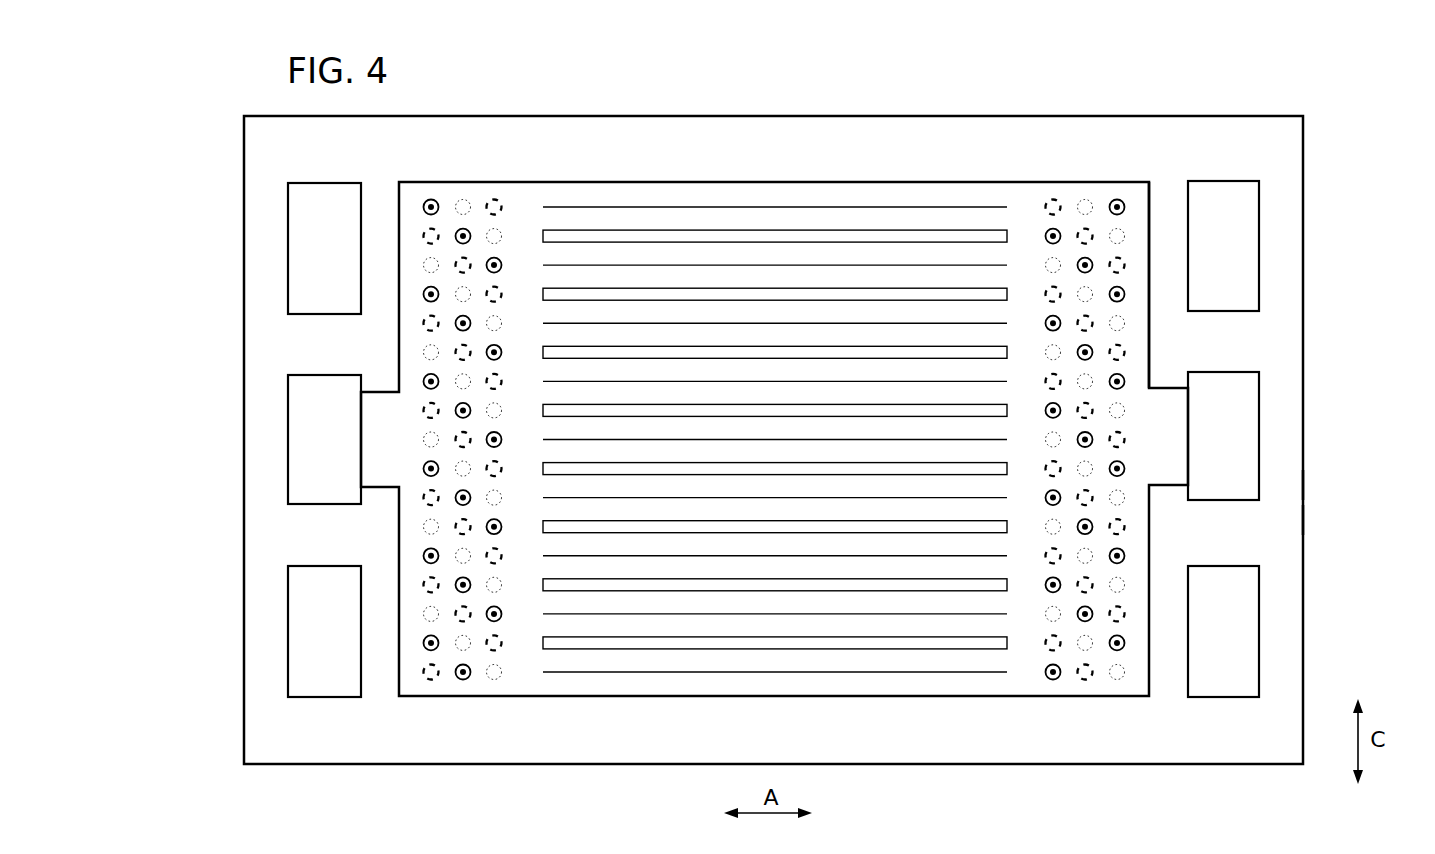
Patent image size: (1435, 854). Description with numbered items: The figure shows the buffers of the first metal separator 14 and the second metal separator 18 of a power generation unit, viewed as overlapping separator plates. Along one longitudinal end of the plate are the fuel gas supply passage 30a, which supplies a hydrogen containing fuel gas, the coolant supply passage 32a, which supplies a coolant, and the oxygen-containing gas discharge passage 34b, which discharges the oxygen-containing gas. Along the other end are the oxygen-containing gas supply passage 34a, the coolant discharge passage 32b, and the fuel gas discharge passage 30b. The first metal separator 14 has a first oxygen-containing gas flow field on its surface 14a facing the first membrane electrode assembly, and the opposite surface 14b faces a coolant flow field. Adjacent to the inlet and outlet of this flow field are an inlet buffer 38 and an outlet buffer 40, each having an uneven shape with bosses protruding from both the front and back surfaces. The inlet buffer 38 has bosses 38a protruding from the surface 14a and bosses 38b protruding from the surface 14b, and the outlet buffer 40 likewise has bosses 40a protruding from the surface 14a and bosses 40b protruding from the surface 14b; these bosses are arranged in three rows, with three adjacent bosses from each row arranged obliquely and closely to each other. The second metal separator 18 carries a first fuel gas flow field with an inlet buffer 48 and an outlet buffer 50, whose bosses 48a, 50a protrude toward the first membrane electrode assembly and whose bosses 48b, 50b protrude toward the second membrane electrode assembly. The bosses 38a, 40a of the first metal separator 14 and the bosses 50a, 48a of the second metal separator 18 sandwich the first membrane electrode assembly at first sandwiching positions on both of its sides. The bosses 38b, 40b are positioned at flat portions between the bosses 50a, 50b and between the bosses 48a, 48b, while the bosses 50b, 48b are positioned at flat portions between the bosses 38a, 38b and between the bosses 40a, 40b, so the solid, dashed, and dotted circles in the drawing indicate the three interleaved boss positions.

The first metal separator 14 is at (773, 418).
The second metal separator 18 is at (1097, 107).
The surface facing the first membrane electrode assembly 14a is at (1290, 488).
The surface facing the coolant flow field 14b is at (1287, 512).
The fuel gas supply passage 30a is at (324, 248).
The fuel gas discharge passage 30b is at (1223, 631).
The coolant supply passage 32a is at (320, 457).
The coolant discharge passage 32b is at (1227, 450).
The oxygen-containing gas supply passage 34a is at (1223, 246).
The oxygen-containing gas discharge passage 34b is at (324, 631).
The inlet buffer 38 is at (1154, 444).
The bosses (first bosses) 38a is at (1157, 413).
The bosses (fourth bosses) 38b is at (1050, 229).
The outlet buffer 40 is at (790, 444).
The bosses (first bosses) 40a is at (433, 413).
The bosses (fourth bosses) 40b is at (431, 199).
The inlet buffer 48 is at (409, 189).
The bosses (second bosses) 48a is at (494, 199).
The bosses (first bosses) 48b is at (424, 353).
The outlet buffer 50 is at (1140, 211).
The bosses (second bosses) 50a is at (1088, 227).
The bosses (first bosses) 50b is at (1124, 323).